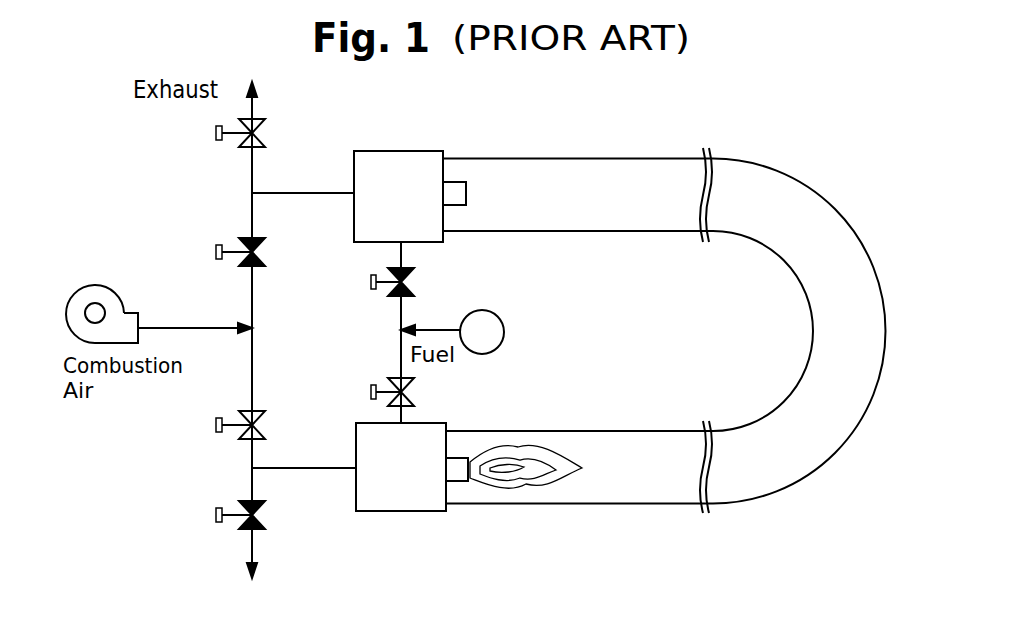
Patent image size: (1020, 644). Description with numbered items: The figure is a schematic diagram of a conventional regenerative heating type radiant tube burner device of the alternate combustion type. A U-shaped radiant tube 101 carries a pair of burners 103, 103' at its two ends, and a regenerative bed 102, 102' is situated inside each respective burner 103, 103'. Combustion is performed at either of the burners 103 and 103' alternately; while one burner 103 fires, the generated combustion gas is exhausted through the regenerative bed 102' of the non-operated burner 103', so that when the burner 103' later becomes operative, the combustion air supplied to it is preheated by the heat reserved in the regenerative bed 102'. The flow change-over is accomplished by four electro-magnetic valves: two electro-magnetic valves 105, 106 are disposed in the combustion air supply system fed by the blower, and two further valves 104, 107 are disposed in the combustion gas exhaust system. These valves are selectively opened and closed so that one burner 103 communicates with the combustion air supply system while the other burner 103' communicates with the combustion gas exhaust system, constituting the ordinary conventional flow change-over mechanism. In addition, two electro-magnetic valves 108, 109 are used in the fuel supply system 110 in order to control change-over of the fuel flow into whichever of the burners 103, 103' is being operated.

The radiant tube 101 is at (798, 472).
The regenerative bed 102 is at (401, 490).
The regenerative bed 102' is at (398, 165).
The burner 103 is at (514, 501).
The burner 103' is at (480, 158).
The electro-magnetic valve 104 is at (262, 125).
The electro-magnetic valve 105 is at (260, 253).
The electro-magnetic valve 106 is at (263, 418).
The electro-magnetic valve 107 is at (263, 513).
The electro-magnetic valve 108 is at (416, 279).
The electro-magnetic valve 109 is at (415, 388).
The fuel supply system 110 is at (400, 342).